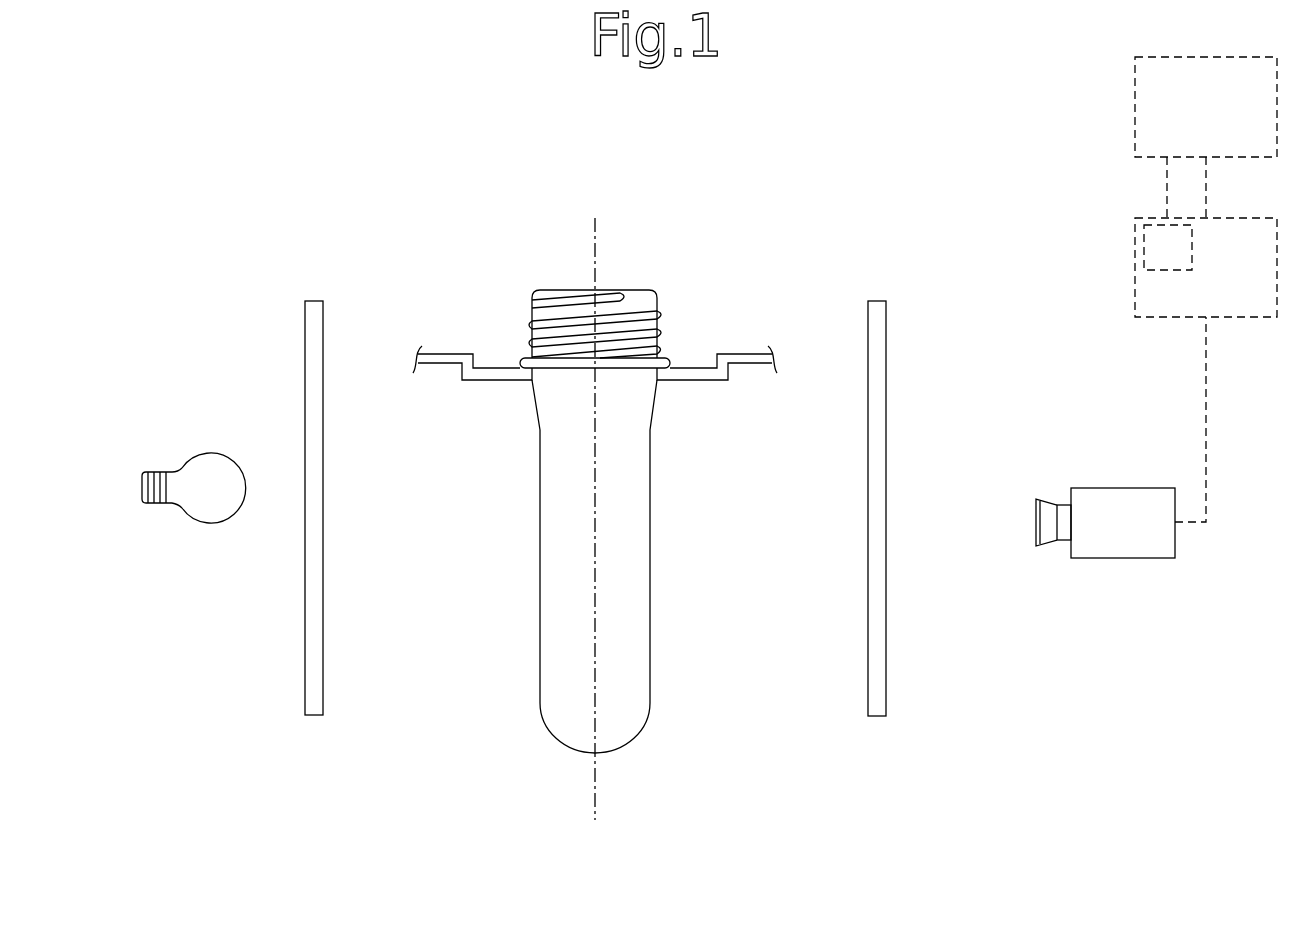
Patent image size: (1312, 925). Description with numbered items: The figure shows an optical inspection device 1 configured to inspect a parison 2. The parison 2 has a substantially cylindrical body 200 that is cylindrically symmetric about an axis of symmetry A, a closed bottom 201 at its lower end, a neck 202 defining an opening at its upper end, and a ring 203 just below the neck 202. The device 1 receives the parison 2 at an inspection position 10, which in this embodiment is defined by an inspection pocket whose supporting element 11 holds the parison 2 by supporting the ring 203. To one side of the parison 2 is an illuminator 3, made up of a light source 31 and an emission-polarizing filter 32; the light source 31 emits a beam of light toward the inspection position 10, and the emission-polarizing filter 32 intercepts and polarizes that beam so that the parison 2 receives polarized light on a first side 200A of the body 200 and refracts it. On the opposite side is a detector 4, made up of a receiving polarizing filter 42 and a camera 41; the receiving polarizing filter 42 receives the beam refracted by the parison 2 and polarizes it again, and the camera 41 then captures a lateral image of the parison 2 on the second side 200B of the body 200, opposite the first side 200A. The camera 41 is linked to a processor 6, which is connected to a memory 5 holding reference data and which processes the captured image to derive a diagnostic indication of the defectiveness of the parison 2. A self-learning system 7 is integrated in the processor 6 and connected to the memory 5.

The optical inspection device 1 is at (413, 170).
The parison 2 is at (595, 515).
The illuminator 3 is at (223, 511).
The detector 4 is at (1022, 582).
The memory 5 is at (1200, 125).
The processor 6 is at (1226, 283).
The self-learning system 7 is at (1161, 261).
The inspection position 10 is at (595, 332).
The supporting element 11 is at (705, 373).
The light source 31 is at (196, 551).
The emission-polarizing filter 32 is at (313, 732).
The camera 41 is at (1111, 536).
The receiving polarizing filter 42 is at (877, 730).
The body 200 is at (580, 600).
The first side 200A is at (540, 505).
The second side 200B is at (650, 508).
The closed bottom 201 is at (567, 747).
The neck 202 is at (548, 338).
The ring 203 is at (538, 366).
The axis of symmetry A is at (595, 233).